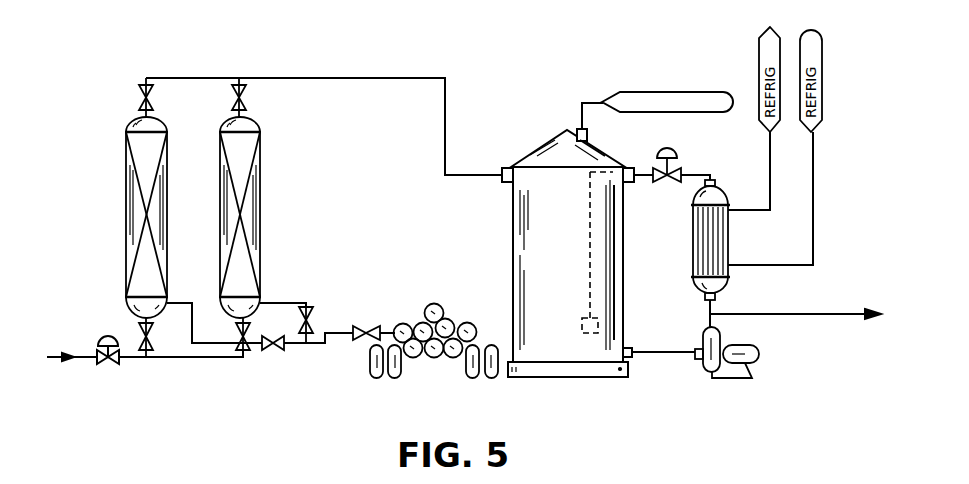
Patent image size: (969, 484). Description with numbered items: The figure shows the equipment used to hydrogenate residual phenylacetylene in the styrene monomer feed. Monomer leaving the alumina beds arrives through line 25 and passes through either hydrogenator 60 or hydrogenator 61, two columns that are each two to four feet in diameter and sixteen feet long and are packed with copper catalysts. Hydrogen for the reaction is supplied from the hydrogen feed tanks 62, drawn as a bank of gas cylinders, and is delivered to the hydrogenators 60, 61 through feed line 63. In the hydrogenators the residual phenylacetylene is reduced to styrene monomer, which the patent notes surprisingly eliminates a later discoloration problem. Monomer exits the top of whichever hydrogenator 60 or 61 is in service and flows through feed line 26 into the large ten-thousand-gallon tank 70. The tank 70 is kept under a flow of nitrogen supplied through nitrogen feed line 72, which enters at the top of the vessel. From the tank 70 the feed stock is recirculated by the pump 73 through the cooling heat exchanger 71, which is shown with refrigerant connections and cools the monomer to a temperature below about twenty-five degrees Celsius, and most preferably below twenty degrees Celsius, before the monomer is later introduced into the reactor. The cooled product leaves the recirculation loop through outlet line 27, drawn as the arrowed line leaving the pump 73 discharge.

The line 25 is at (88, 356).
The feed line 26 is at (375, 76).
The product outlet line 27 is at (825, 313).
The hydrogenator 60 is at (126, 242).
The hydrogenator 61 is at (260, 242).
The hydrogen feed tanks 62 is at (443, 307).
The feed line 63 is at (342, 333).
The tank 70 is at (503, 242).
The cooling heat exchanger 71 is at (729, 250).
The nitrogen feed line 72 is at (583, 120).
The pump 73 is at (700, 368).